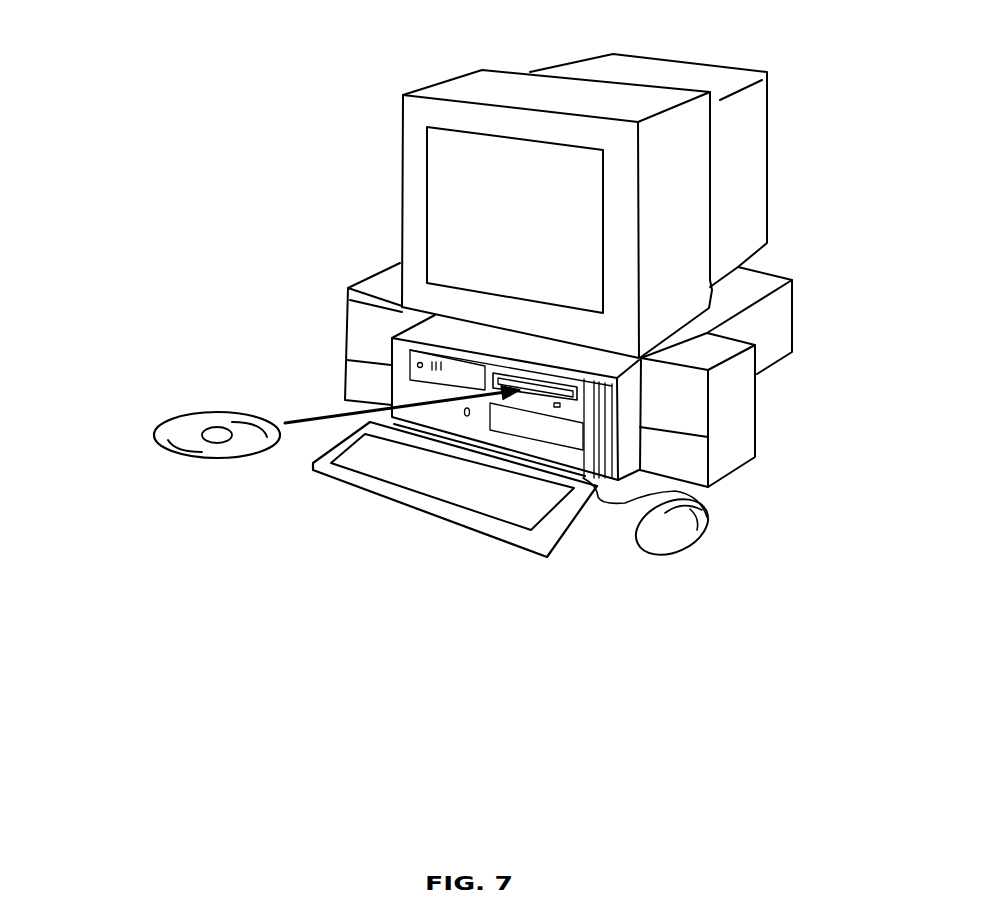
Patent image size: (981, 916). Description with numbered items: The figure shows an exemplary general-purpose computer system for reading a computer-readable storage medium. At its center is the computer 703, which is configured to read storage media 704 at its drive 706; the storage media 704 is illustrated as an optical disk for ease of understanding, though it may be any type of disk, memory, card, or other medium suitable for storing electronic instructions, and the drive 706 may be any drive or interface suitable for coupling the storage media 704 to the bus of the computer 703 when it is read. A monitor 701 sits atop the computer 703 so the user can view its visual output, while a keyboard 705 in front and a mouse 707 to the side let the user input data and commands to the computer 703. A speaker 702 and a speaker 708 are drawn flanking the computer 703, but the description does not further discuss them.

The monitor 701 is at (400, 100).
The speaker 702 is at (345, 293).
The computer 703 is at (390, 343).
The storage media 704 is at (153, 425).
The keyboard 705 is at (460, 525).
The drive 706 is at (570, 407).
The mouse 707 is at (703, 542).
The speaker 708 is at (753, 417).